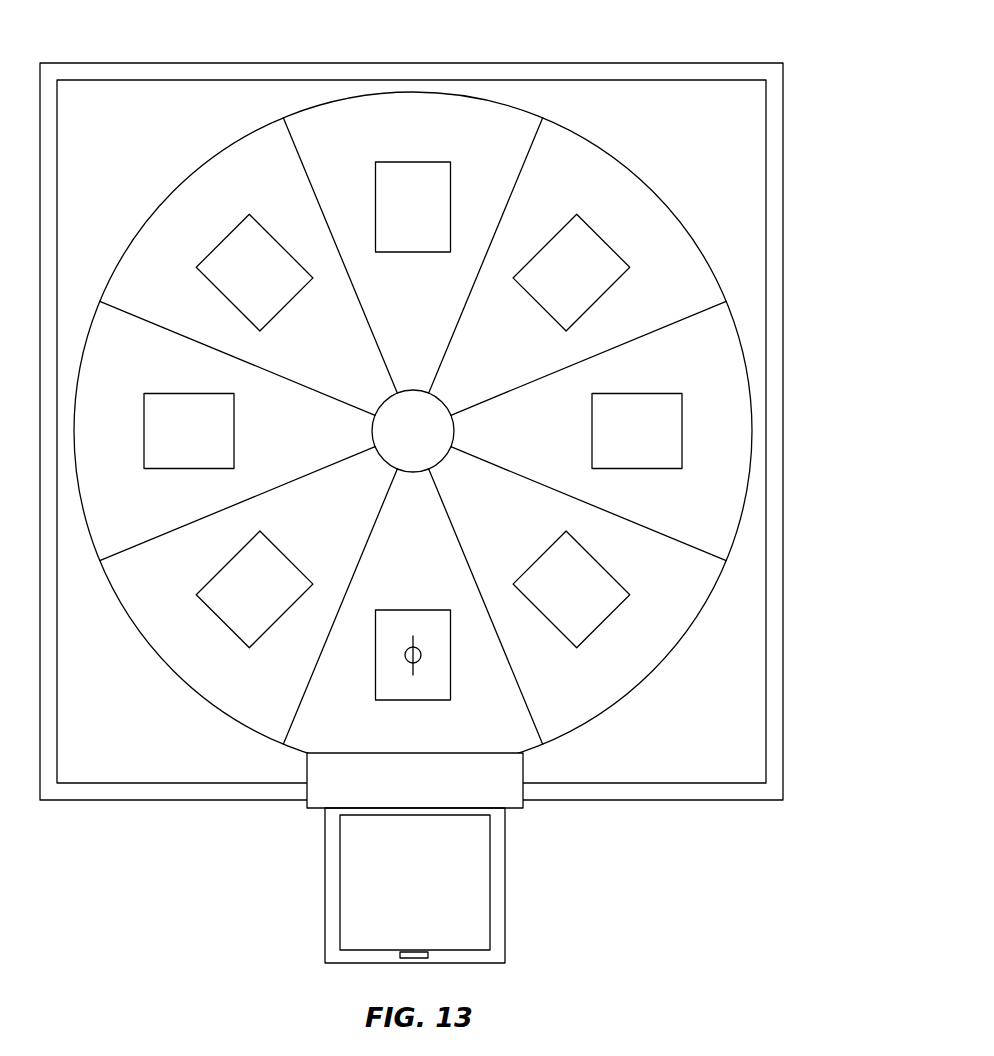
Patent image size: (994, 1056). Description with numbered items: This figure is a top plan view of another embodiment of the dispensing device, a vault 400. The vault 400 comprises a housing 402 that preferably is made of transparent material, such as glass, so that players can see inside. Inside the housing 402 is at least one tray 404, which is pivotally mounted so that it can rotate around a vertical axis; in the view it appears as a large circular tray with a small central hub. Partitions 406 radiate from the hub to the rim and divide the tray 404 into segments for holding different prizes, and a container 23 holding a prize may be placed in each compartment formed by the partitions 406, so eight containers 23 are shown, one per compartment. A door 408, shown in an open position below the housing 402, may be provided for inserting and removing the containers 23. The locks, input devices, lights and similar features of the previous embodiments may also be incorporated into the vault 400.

The vault 400 is at (459, 403).
The housing 402 is at (783, 156).
The tray 404 is at (632, 170).
The partitions 406 is at (530, 158).
The container 23 is at (395, 163).
The door 408 is at (505, 917).